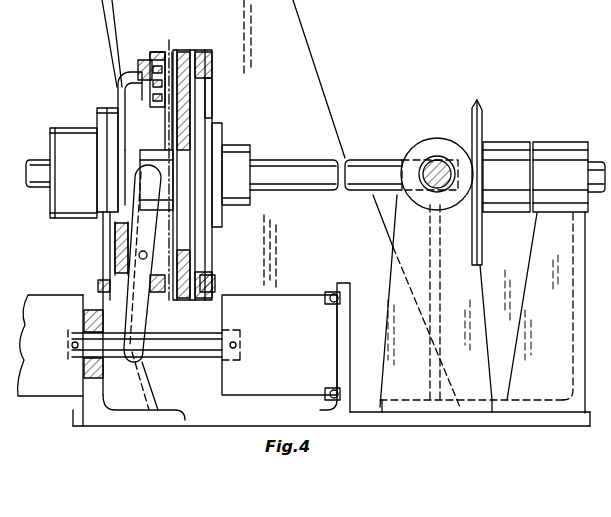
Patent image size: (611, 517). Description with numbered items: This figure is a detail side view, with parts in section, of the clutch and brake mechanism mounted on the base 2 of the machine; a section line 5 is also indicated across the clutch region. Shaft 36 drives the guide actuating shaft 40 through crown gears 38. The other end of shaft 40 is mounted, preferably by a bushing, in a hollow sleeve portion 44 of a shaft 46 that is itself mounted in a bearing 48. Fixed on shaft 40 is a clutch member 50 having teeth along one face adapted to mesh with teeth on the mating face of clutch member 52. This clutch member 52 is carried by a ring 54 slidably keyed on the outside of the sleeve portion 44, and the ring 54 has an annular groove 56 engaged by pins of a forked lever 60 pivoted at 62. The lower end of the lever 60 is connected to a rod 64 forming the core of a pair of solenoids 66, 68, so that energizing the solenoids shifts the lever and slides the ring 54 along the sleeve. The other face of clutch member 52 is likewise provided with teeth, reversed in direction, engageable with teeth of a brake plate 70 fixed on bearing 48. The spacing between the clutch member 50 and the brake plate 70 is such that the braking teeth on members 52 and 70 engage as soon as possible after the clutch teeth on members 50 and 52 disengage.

The base 2 is at (205, 420).
The section line 5- 5 is at (158, 24).
The shaft 36 is at (430, 163).
The crown gears 38 is at (442, 146).
The guide actuating shaft 40 is at (360, 173).
The hollow sleeve portion 44 is at (150, 152).
The shaft 46 is at (37, 167).
The bearing 48 is at (65, 147).
The clutch member 50 is at (210, 92).
The clutch member 52 is at (188, 50).
The ring 54 is at (172, 147).
The annular groove 56 is at (133, 150).
The forked lever 60 is at (122, 322).
The pivot 62 is at (132, 257).
The rod 64 is at (154, 360).
The solenoid 66 is at (278, 313).
The solenoid 68 is at (32, 300).
The brake plate 70 is at (141, 62).